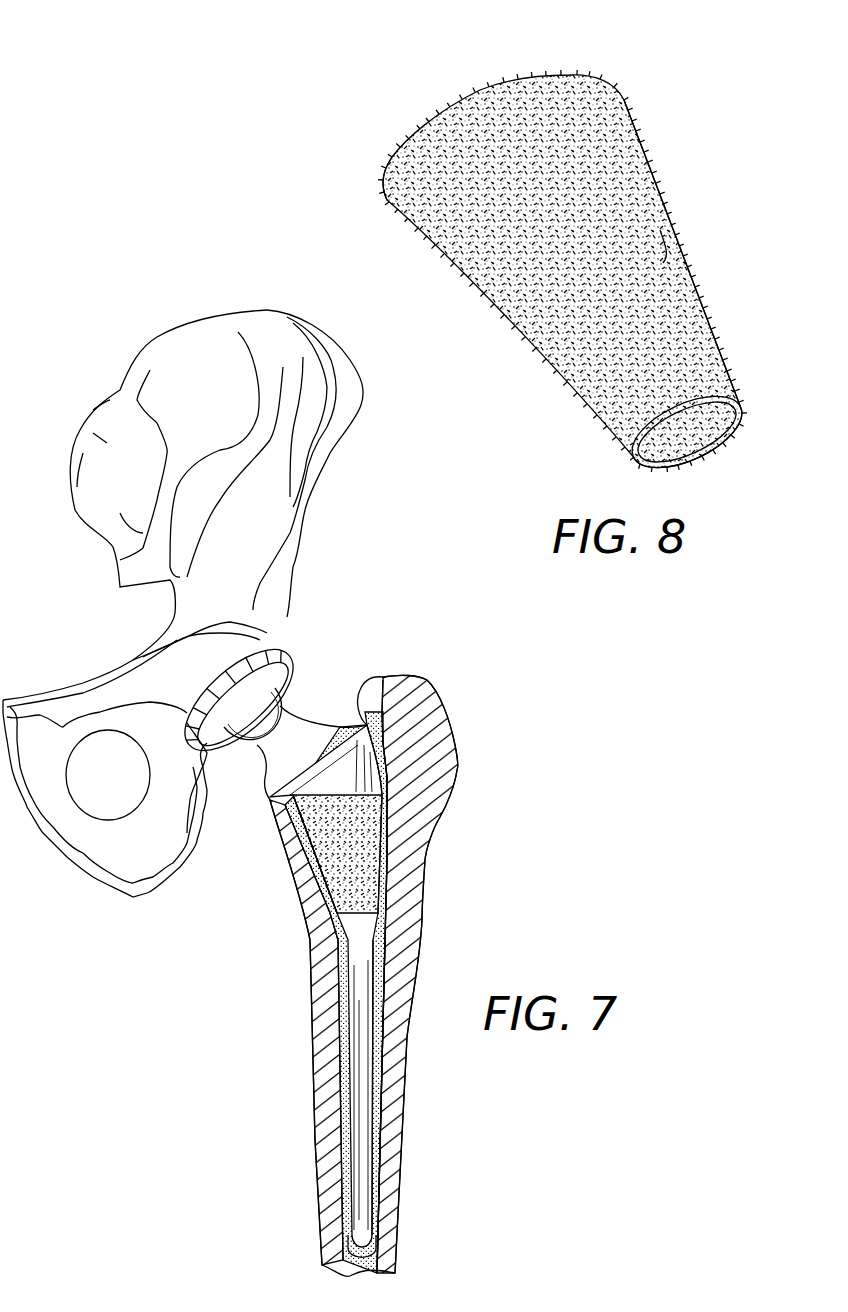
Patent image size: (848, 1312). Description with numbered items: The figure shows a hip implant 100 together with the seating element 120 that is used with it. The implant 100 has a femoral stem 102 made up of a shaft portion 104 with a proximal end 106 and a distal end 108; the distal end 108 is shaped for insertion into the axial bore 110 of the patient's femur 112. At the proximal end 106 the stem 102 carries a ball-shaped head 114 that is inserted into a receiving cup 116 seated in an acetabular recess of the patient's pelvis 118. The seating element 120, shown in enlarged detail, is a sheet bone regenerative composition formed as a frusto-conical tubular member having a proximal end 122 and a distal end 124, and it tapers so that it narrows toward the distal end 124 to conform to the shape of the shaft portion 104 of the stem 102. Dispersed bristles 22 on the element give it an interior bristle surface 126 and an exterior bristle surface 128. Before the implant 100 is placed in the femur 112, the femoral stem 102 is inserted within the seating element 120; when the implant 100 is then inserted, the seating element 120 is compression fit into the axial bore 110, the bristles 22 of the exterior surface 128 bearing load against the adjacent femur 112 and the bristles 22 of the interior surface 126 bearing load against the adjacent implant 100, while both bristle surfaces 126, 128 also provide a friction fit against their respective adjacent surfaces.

In FIG. 8, the bristles 22 is at (635, 128).
In FIG. 7, the bristles 22 is at (313, 842).
In FIG. 7, the hip implant 100 is at (313, 723).
In FIG. 7, the femoral stem 102 is at (387, 975).
In FIG. 7, the shaft portion 104 is at (378, 1100).
In FIG. 7, the proximal end 106 is at (288, 712).
In FIG. 7, the distal end 108 is at (377, 1223).
In FIG. 7, the axial bore 110 is at (362, 690).
In FIG. 7, the femur 112 is at (457, 783).
In FIG. 7, the ball-shaped head 114 is at (292, 690).
In FIG. 7, the receiving cup 116 is at (290, 640).
In FIG. 7, the pelvis 118 is at (330, 453).
In FIG. 8, the seating element 120 is at (512, 78).
In FIG. 7, the seating element 120 is at (258, 752).
In FIG. 8, the proximal end 122 is at (383, 148).
In FIG. 8, the distal end 124 is at (665, 470).
In FIG. 8, the interior bristle surface 126 is at (703, 423).
In FIG. 8, the exterior bristle surface 128 is at (672, 250).
In FIG. 7, the exterior bristle surface 128 is at (332, 880).